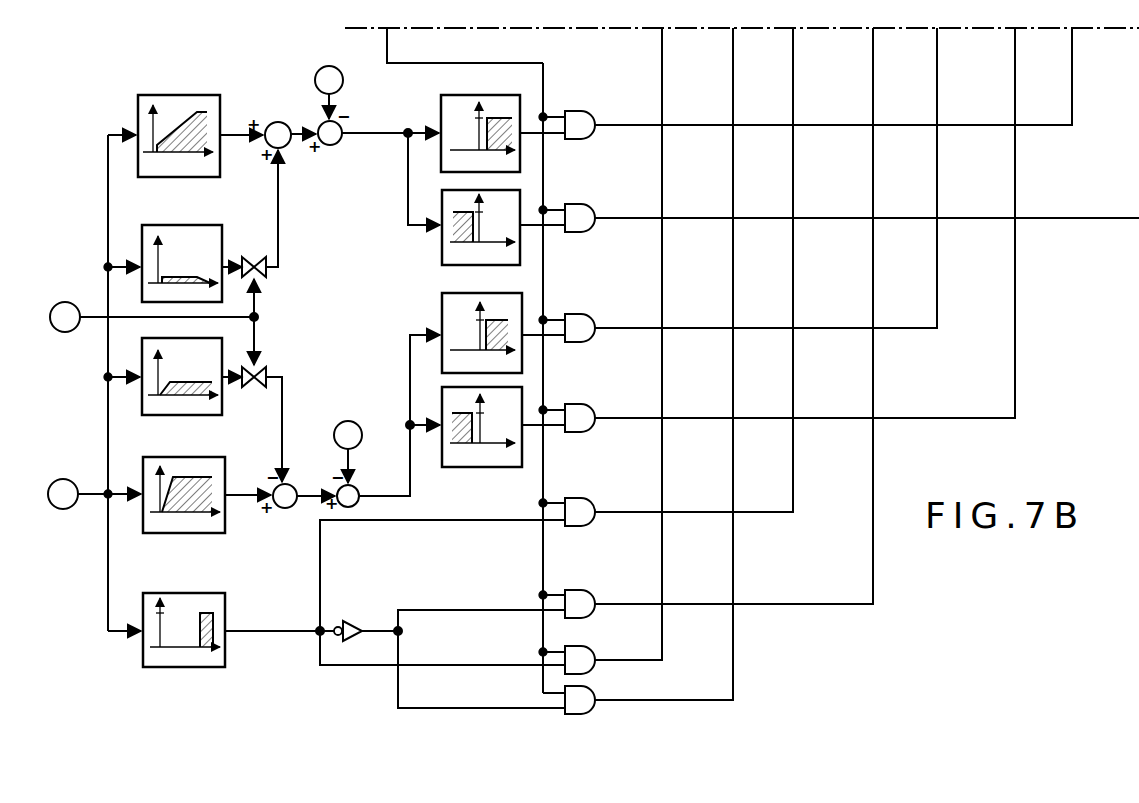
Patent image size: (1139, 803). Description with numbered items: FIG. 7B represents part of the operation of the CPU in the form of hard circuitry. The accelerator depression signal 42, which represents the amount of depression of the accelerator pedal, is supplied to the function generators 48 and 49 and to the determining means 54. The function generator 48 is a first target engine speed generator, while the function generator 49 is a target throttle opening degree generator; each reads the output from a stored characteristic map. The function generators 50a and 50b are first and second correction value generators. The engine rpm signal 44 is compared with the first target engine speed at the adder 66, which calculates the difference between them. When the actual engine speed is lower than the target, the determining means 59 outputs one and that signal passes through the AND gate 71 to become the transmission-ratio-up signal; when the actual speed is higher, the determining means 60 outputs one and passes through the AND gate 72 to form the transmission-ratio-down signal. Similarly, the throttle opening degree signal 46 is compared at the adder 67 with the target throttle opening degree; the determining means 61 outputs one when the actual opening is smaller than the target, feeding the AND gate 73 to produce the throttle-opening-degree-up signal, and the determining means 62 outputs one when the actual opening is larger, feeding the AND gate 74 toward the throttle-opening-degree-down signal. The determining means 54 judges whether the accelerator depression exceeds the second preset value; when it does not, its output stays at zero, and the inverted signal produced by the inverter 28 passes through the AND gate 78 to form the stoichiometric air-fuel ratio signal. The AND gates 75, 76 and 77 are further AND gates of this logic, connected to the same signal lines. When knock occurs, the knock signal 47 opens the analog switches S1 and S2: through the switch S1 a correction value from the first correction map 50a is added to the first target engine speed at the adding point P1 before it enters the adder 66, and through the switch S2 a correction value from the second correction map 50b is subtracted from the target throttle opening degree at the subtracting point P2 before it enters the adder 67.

The inverter 28 is at (352, 619).
The accelerator depression signal 42 is at (66, 478).
The engine rpm signal 44 is at (328, 64).
The throttle opening degree signal 46 is at (350, 421).
The knock signal 47 is at (59, 302).
The function generator 48 is at (200, 93).
The function generator 49 is at (187, 535).
The function generator 50a is at (196, 212).
The function generator 50b is at (185, 416).
The determining means 54 is at (226, 653).
The determining means 59 is at (441, 108).
The determining means 60 is at (442, 244).
The determining means 61 is at (442, 310).
The determining means 62 is at (497, 468).
The adder 66 is at (336, 145).
The adder 67 is at (342, 484).
The AND gate 71 is at (580, 114).
The AND gate 72 is at (581, 204).
The AND gate 73 is at (582, 314).
The AND gate 74 is at (579, 404).
The AND gate 75 is at (579, 498).
The AND gate 76 is at (578, 590).
The AND gate 77 is at (590, 651).
The AND gate 78 is at (595, 693).
The adding point P1 is at (278, 120).
The subtracting point P2 is at (287, 509).
The analog switch S1 is at (247, 256).
The analog switch S2 is at (265, 367).